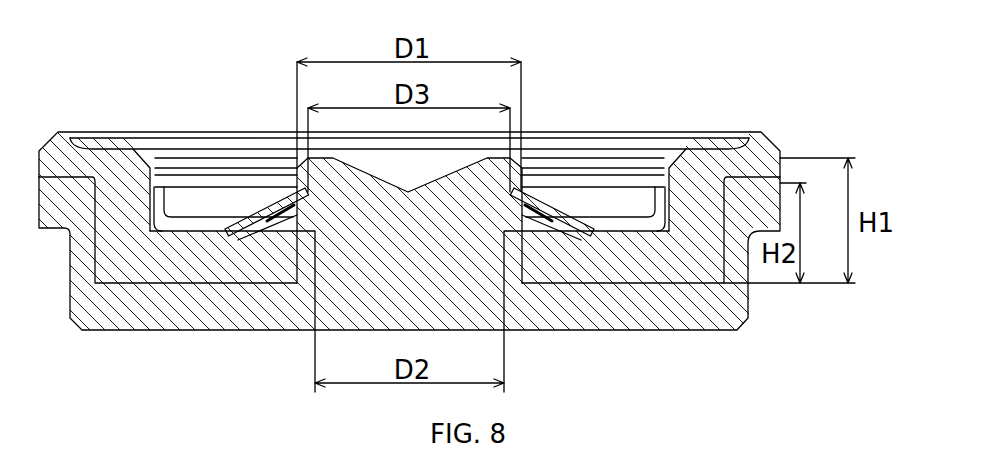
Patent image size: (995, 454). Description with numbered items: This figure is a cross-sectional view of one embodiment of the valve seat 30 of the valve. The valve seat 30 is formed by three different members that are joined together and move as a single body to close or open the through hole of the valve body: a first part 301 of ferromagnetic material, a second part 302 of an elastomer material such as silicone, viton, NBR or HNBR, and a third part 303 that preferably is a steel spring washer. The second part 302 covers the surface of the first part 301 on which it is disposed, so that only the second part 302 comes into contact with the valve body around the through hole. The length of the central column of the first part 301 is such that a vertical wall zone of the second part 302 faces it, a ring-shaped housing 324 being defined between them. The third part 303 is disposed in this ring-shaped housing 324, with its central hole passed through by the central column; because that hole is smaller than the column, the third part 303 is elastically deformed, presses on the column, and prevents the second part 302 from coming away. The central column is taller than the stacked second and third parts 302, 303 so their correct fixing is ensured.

The valve seat 30 is at (409, 206).
The first part 301 is at (647, 321).
The second part 302 is at (108, 167).
The third part 303 is at (193, 233).
The ring-shaped housing 324 is at (225, 196).